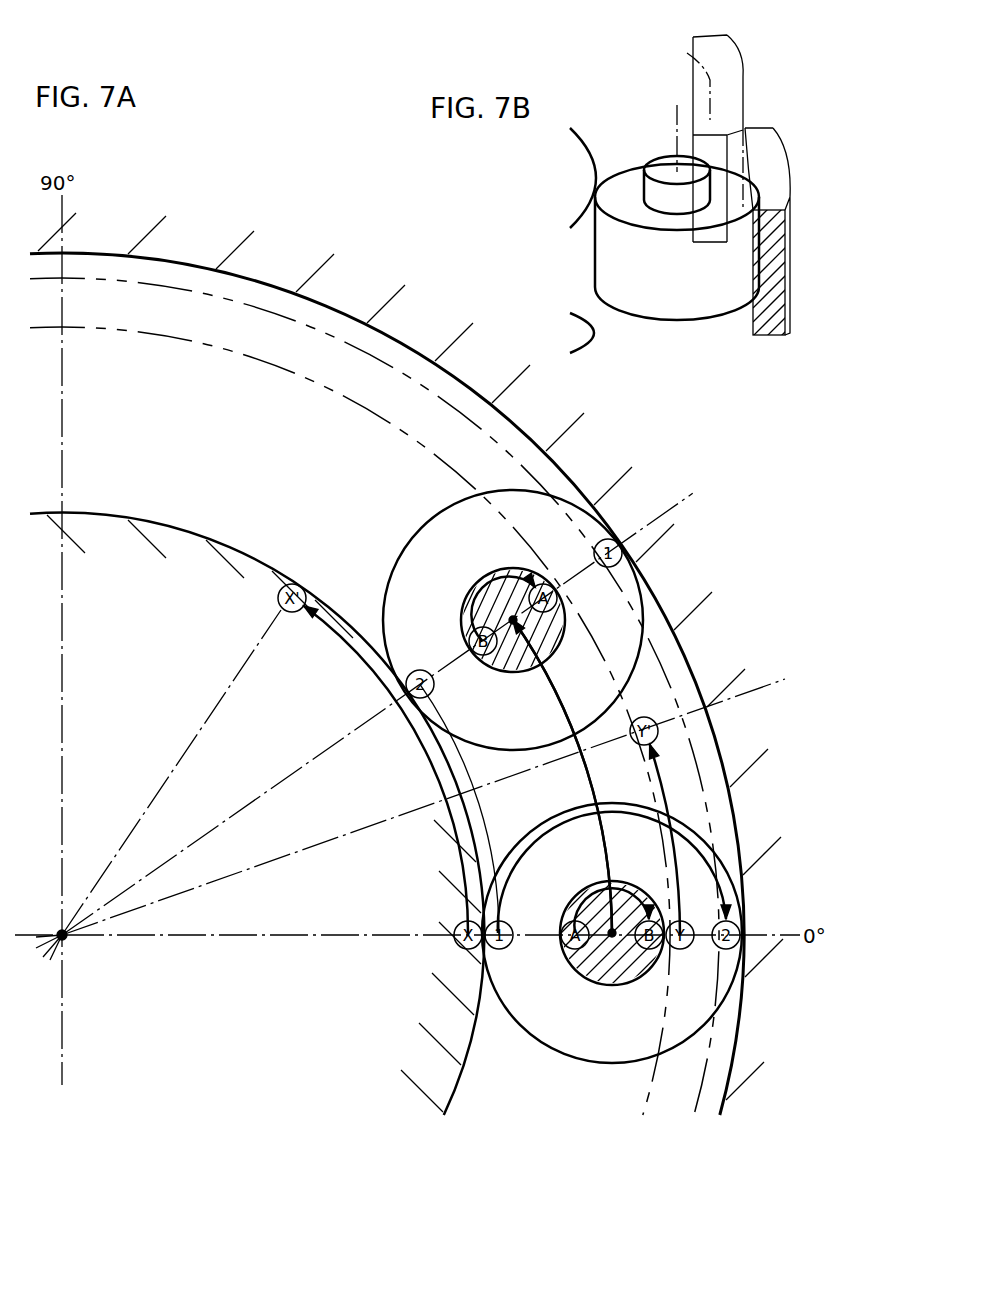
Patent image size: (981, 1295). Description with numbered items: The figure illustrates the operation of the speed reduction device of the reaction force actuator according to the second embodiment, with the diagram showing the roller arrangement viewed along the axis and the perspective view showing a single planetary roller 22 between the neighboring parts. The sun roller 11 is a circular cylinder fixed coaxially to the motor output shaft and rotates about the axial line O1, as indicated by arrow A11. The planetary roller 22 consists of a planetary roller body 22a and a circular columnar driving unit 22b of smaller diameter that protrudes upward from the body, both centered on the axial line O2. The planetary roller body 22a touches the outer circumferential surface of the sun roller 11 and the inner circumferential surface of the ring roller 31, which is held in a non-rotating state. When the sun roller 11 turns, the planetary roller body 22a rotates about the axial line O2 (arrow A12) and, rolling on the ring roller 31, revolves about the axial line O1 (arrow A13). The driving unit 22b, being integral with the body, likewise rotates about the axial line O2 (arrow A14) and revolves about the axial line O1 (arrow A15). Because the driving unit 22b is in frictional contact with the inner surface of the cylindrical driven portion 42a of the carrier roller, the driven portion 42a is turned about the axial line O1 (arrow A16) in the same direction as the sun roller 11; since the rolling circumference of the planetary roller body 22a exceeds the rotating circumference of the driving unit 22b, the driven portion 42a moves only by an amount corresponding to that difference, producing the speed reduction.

In FIG. 7A, the sun roller 11 is at (217, 552).
In FIG. 7B, the sun roller 11 is at (595, 320).
In FIG. 7A, the planetary roller 22 is at (538, 795).
In FIG. 7B, the planetary roller 22 is at (663, 221).
In FIG. 7A, the planetary roller body 22a is at (488, 748).
In FIG. 7B, the planetary roller body 22a is at (677, 302).
In FIG. 7A, the driving unit 22b is at (510, 672).
In FIG. 7B, the driving unit 22b is at (662, 165).
In FIG. 7A, the ring roller 31 is at (248, 304).
In FIG. 7B, the ring roller 31 is at (770, 313).
In FIG. 7A, the driven portion 42a is at (400, 363).
In FIG. 7B, the driven portion 42a is at (687, 53).
In FIG. 7A, the axial line O1 is at (68, 940).
In FIG. 7A, the axial line O2 is at (517, 624).
In FIG. 7B, the axial line O2 is at (675, 125).
In FIG. 7A, the arrow indicating rotation of the sun roller A11 is at (415, 731).
In FIG. 7A, the arrow indicating rotation of the planetary roller body A12 is at (527, 857).
In FIG. 7A, the arrow indicating revolution of the planetary roller body A13 is at (587, 768).
In FIG. 7A, the arrow indicating rotation of the driving unit A14 is at (598, 882).
In FIG. 7A, the arrow indicating revolution of the driving unit A15 is at (563, 778).
In FIG. 7A, the arrow indicating rotation of the driven portion A16 is at (667, 787).